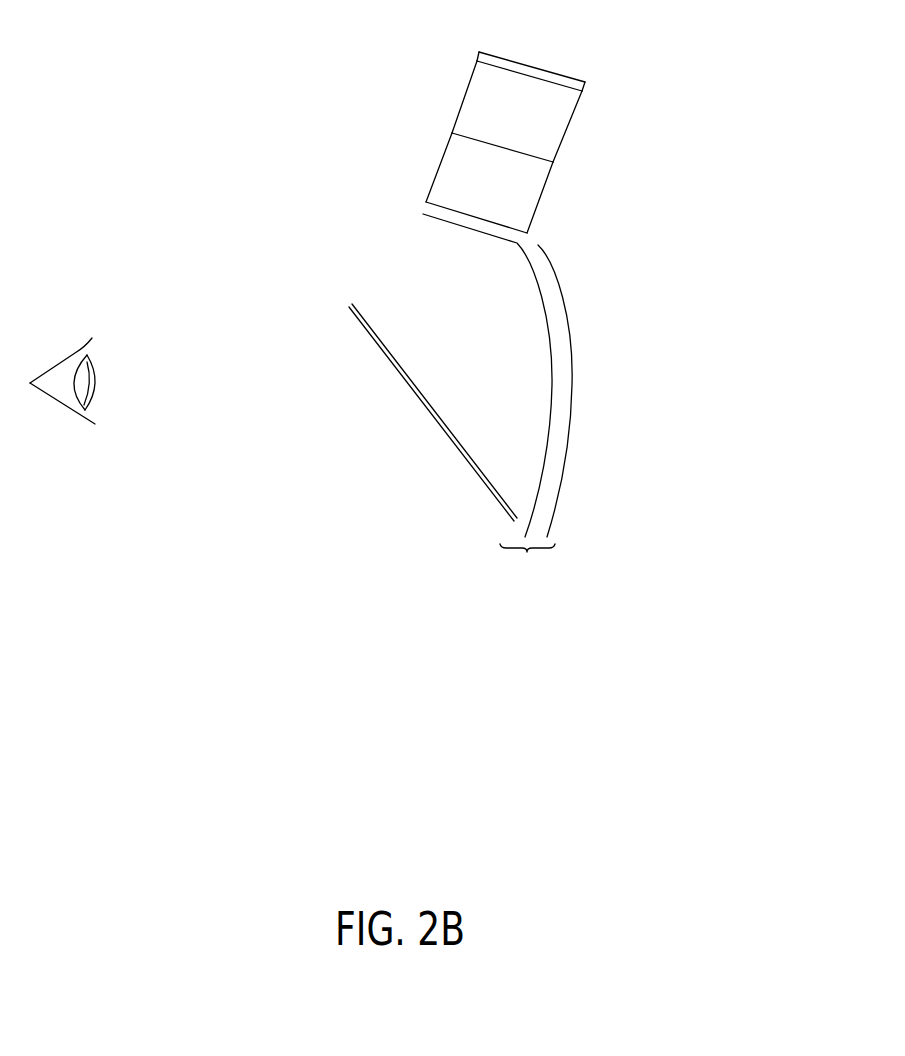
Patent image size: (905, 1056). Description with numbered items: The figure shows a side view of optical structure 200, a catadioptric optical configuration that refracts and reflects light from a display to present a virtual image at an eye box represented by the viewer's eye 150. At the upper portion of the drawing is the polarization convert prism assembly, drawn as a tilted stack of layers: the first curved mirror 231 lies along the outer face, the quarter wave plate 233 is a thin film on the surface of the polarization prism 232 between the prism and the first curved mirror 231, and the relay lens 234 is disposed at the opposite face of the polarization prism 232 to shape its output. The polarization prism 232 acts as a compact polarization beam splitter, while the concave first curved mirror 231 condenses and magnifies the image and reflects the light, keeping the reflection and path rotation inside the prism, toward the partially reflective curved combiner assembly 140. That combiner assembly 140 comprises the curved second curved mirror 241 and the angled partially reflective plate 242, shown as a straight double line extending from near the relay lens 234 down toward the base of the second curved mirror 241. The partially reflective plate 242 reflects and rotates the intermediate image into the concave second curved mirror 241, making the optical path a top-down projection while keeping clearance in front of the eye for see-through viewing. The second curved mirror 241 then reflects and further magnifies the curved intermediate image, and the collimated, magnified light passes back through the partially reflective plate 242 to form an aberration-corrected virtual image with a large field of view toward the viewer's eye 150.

The optical structure 200 is at (697, 145).
The first curved mirror 231 is at (565, 75).
The polarization prism 232 is at (562, 147).
The quarter wave plate 233 is at (583, 90).
The relay lens 234 is at (427, 200).
The second curved mirror 241 is at (571, 345).
The partially reflective plate 242 is at (352, 304).
The partially reflective curved combiner assembly 140 is at (527, 569).
The viewer's eye 150 is at (63, 407).